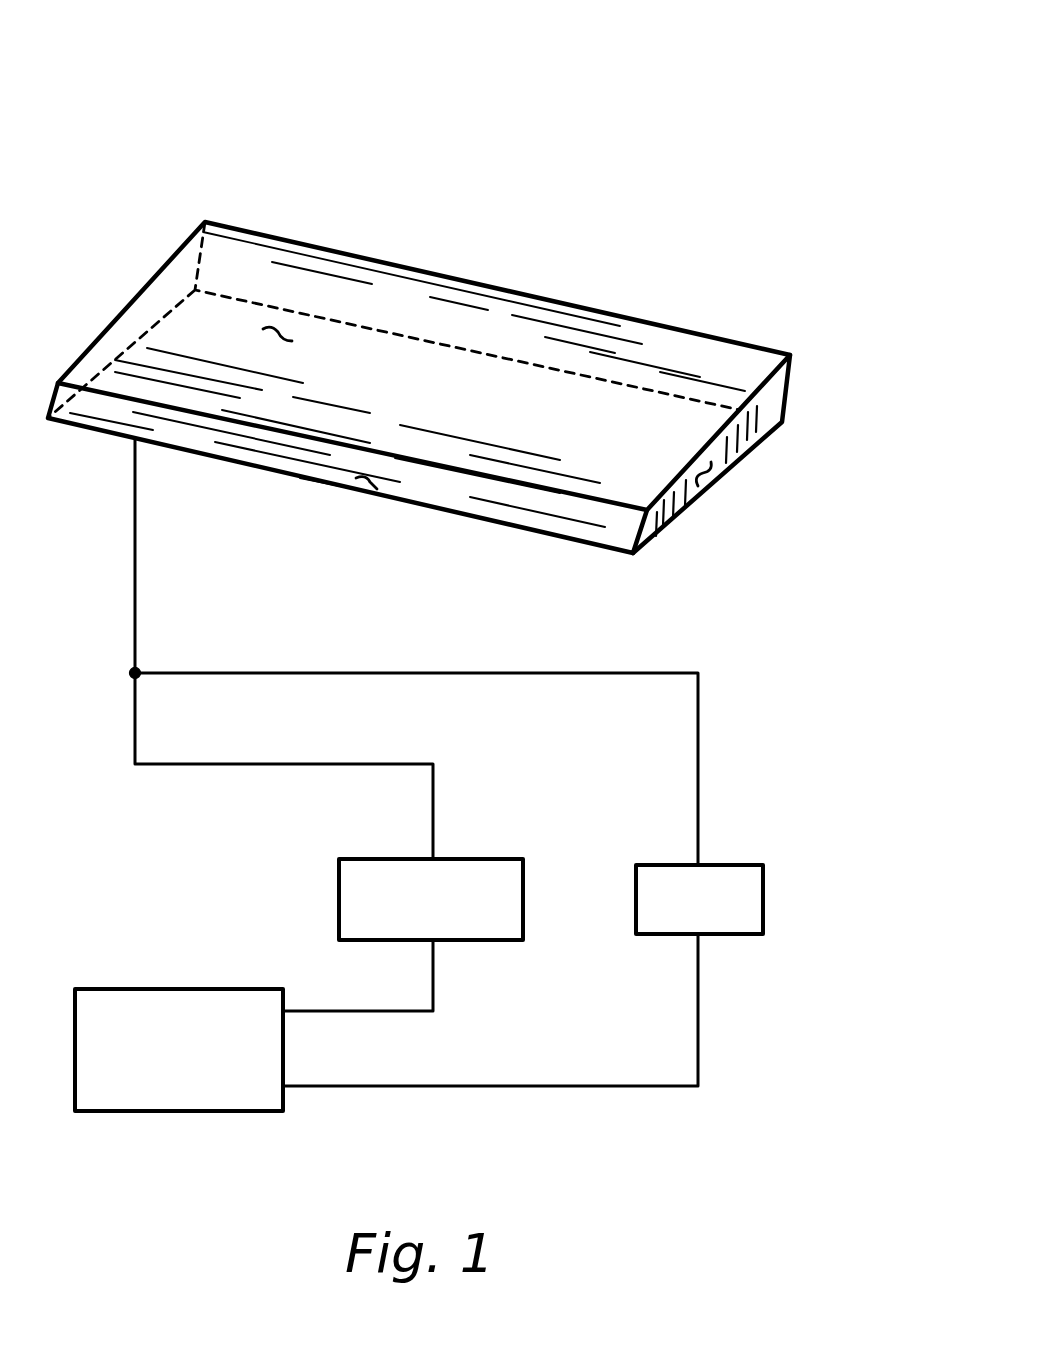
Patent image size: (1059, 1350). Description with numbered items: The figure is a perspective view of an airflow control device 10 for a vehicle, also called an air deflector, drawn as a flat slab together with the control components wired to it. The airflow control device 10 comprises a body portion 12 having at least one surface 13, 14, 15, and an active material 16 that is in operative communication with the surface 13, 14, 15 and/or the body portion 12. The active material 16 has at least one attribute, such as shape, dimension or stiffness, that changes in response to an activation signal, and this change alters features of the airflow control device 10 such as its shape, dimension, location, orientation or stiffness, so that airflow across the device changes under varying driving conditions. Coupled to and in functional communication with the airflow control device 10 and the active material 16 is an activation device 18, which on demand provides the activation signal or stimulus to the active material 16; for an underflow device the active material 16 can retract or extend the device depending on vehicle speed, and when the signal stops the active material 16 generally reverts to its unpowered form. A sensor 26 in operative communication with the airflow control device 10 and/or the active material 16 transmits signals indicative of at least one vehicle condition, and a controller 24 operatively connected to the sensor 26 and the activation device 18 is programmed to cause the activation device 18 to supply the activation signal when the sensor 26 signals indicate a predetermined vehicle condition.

The airflow control device 10 is at (575, 138).
The body portion 12 is at (788, 400).
The surface 13 is at (285, 336).
The surface 14 is at (712, 484).
The surface 15 is at (368, 490).
The active material 16 is at (548, 337).
The activation device 18 is at (475, 859).
The controller 24 is at (150, 987).
The sensor 26 is at (765, 886).